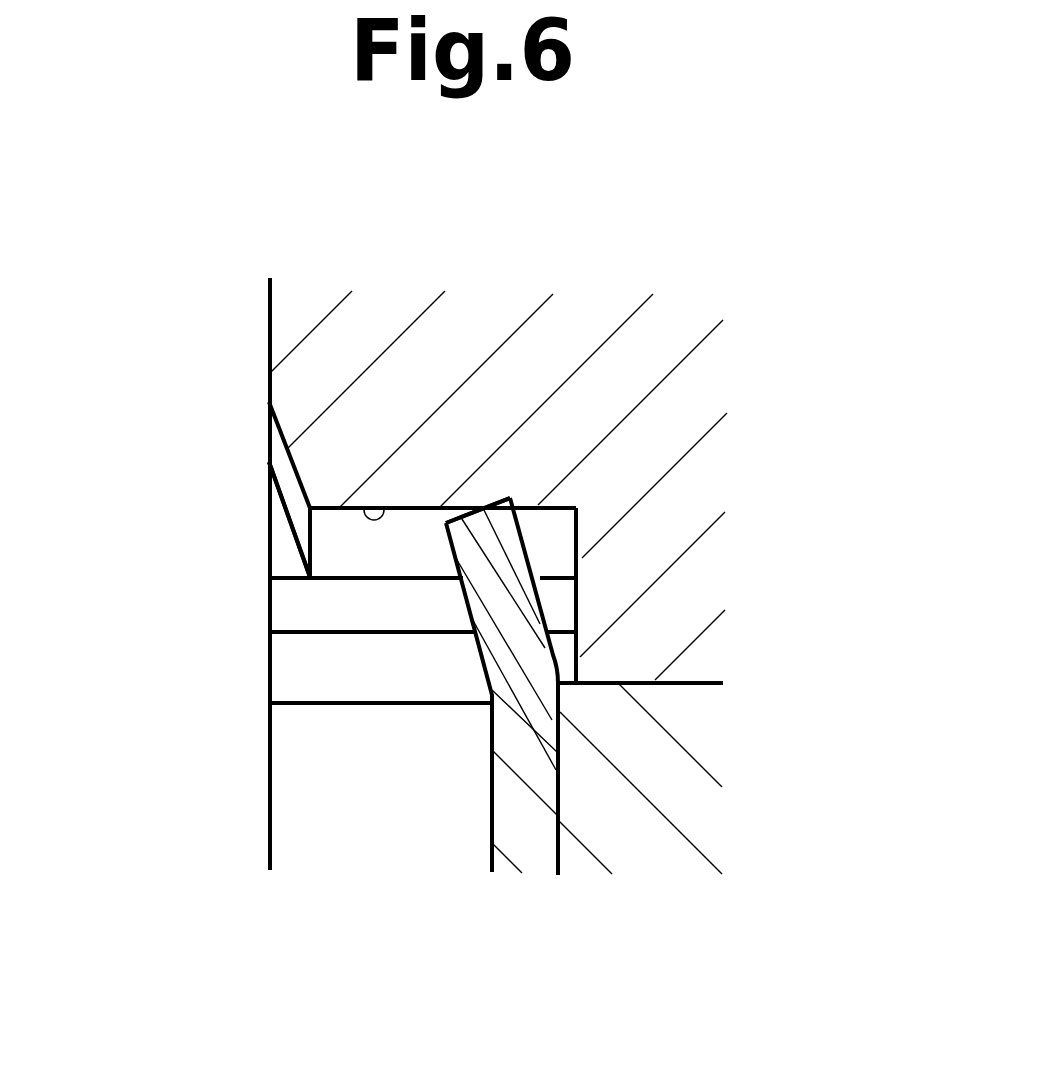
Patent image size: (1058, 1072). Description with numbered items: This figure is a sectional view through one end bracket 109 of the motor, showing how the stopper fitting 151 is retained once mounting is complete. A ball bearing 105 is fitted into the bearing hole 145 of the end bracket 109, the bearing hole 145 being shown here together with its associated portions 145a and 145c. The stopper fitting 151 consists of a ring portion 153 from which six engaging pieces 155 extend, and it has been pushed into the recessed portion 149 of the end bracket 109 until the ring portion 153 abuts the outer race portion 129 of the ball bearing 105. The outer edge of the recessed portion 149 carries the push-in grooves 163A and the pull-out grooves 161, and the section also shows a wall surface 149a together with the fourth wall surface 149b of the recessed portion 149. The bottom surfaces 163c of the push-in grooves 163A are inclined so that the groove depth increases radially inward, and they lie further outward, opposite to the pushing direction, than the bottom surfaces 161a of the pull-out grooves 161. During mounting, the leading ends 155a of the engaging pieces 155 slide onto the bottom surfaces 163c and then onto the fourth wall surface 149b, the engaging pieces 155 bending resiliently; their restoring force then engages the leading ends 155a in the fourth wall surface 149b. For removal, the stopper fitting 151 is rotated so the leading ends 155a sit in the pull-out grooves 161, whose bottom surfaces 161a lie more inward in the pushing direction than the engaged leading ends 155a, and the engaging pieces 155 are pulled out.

The ball bearing 105 is at (687, 820).
The end bracket 109 is at (688, 310).
The outer race portion 129 is at (632, 740).
The bearing hole 145 is at (670, 685).
The housing inner wall 145a is at (558, 822).
The housing upper surface 145c is at (698, 685).
The recessed portion 149 is at (382, 672).
The seal member outer surface 149a is at (580, 537).
The fourth wall surface 149b is at (373, 510).
The stopper fitting 151 is at (482, 728).
The ring portion 153 is at (512, 786).
The engaging piece 155 is at (502, 582).
The leading end 155a is at (509, 498).
The pull-out groove 161 is at (340, 652).
The bottom surface of pull-out groove 161a is at (578, 643).
The push-in groove 163A is at (270, 437).
The bottom surface of push-in groove 163c is at (283, 455).